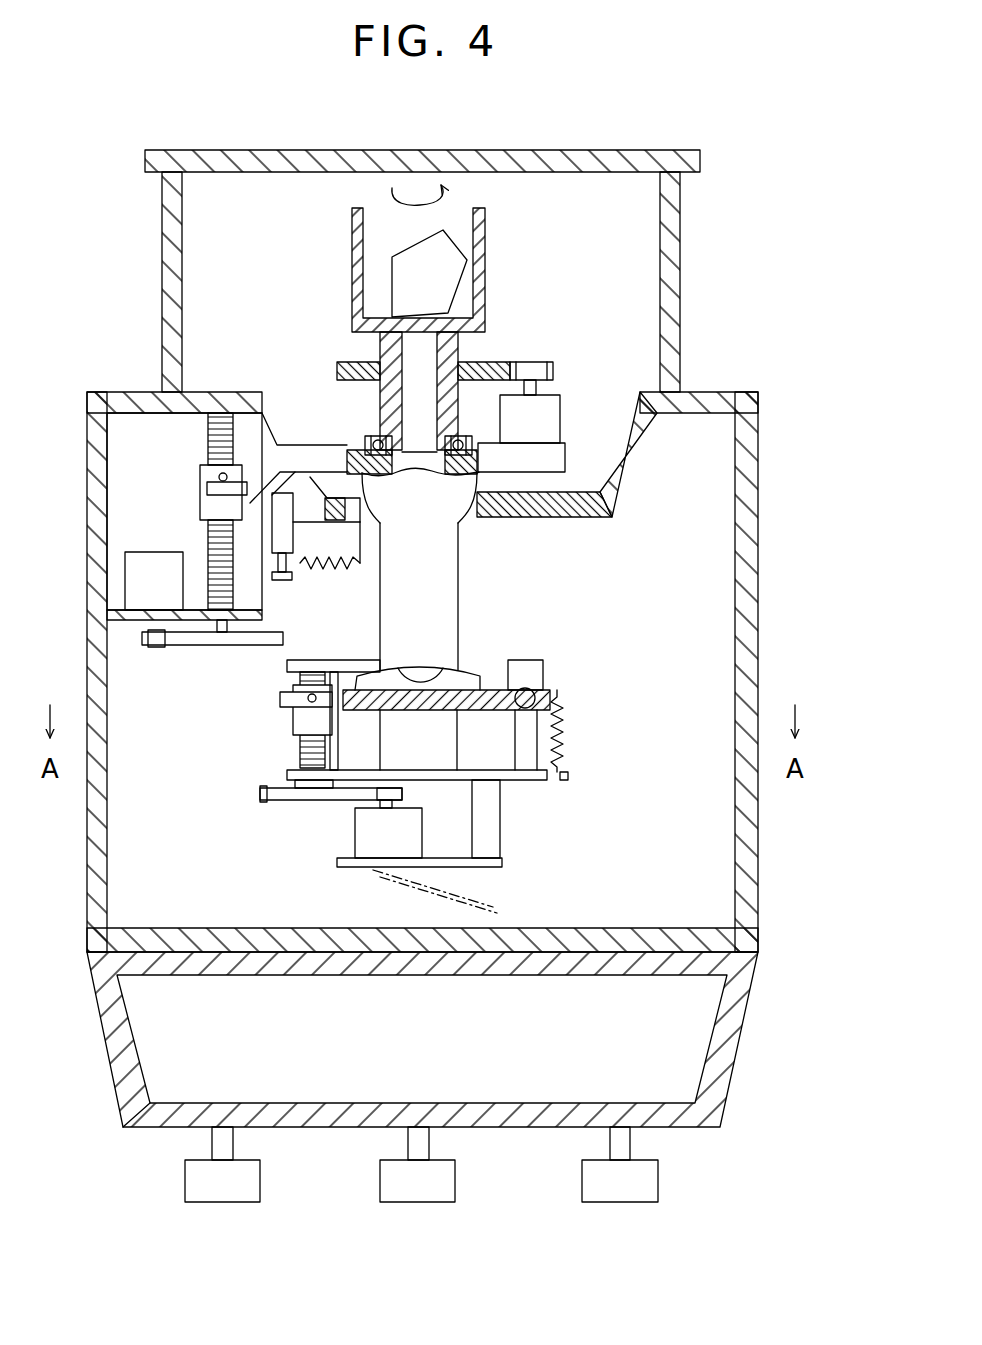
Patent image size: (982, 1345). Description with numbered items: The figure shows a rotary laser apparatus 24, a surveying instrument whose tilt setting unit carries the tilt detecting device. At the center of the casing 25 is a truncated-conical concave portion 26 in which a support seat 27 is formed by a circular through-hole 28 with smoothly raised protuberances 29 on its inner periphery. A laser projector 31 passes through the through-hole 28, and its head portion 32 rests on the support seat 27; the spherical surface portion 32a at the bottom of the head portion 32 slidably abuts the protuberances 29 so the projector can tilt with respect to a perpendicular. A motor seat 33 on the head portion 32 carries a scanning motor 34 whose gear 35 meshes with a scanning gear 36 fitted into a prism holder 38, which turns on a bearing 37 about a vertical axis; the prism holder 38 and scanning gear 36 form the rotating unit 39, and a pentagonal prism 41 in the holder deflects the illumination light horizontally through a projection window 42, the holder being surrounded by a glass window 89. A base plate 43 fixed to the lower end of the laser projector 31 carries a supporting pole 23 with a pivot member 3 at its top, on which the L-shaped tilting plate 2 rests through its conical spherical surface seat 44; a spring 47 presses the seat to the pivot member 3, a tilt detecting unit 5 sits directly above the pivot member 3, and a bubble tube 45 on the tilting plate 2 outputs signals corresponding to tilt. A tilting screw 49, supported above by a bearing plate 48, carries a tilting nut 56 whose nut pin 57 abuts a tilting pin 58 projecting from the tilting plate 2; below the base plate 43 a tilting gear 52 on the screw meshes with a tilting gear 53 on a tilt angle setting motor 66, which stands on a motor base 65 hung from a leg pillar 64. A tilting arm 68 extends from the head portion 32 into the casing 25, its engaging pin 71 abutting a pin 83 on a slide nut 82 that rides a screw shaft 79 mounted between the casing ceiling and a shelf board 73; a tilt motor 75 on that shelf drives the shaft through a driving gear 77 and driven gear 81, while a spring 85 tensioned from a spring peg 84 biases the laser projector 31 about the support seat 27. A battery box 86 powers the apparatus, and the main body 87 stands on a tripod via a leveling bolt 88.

The tilting plate 2 is at (472, 711).
The pivot member 3 is at (538, 692).
The tilt detecting unit 5 is at (533, 660).
The supporting pole 23 is at (517, 782).
The rotary laser apparatus 24 is at (76, 282).
The casing 25 is at (424, 627).
The concave portion 26 is at (610, 452).
The support seat 27 is at (612, 494).
The through-hole 28 is at (355, 566).
The protuberance 29 is at (477, 523).
The laser projector 31 is at (458, 578).
The head portion 32 is at (482, 442).
The spherical surface portion 32a is at (333, 472).
The motor seat 33 is at (568, 450).
The scanning motor 34 is at (562, 403).
The gear 35 is at (533, 360).
The scanning gear 36 is at (464, 395).
The bearing 37 is at (372, 436).
The prism holder 38 is at (487, 234).
The rotating unit 39 is at (337, 312).
The pentagonal prism 41 is at (362, 296).
The projection window 42 is at (352, 270).
The base plate 43 is at (505, 781).
The spherical surface seat 44 is at (564, 720).
The bubble tube 45 is at (470, 667).
The spring 47 is at (565, 738).
The bearing plate 48 is at (300, 653).
The tilting screw 49 is at (282, 793).
The tilting gear 52 is at (263, 802).
The tilting gear 53 is at (403, 794).
The tilting nut 56 is at (293, 695).
The nut pin 57 is at (290, 713).
The tilting pin 58 is at (297, 758).
The leg pillar 64 is at (503, 842).
The motor base 65 is at (503, 861).
The tilt angle setting motor 66 is at (356, 828).
The tilting arm 68 is at (313, 445).
The engaging pin 71 is at (202, 483).
The shelf board 73 is at (120, 625).
The tilt motor 75 is at (148, 552).
The driving gear 77 is at (150, 647).
The screw shaft 79 is at (238, 575).
The driven gear 81 is at (200, 646).
The slide nut 82 is at (200, 464).
The pin 83 is at (248, 425).
The spring peg 84 is at (220, 537).
The spring 85 is at (361, 566).
The battery box 86 is at (152, 1130).
The main body 87 is at (768, 955).
The leveling bolt 88 is at (456, 1202).
The glass window 89 is at (680, 265).